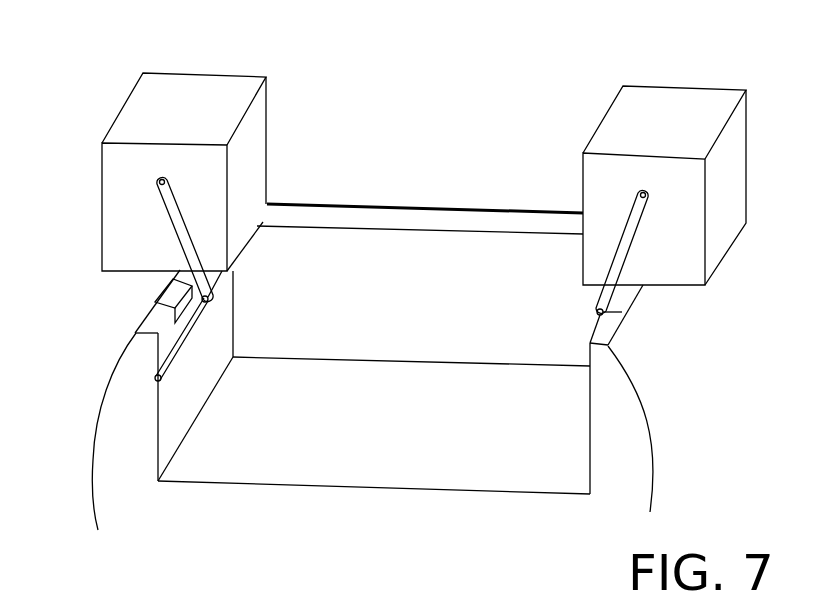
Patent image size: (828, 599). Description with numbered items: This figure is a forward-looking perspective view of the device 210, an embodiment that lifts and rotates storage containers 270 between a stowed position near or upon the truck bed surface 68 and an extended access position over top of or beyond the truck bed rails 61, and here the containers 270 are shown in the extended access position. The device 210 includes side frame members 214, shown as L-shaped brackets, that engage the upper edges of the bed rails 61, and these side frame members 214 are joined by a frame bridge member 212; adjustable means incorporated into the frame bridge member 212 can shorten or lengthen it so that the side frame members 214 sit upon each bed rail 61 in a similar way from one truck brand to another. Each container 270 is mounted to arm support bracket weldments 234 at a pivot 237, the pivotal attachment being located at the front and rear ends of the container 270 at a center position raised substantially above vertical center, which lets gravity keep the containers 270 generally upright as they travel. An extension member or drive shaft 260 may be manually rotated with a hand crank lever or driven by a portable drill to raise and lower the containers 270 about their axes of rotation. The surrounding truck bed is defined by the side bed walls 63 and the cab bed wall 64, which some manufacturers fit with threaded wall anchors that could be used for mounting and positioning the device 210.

The device 210 is at (116, 56).
The containers 270 is at (262, 102).
The frame bridge member 212 is at (338, 205).
The cab bed wall 64 is at (477, 248).
The pivot pin 237 is at (158, 188).
The arm support bracket weldments 234 is at (174, 227).
The bed rail 61 is at (151, 326).
The extension member or drive shaft 260 is at (157, 379).
The side bed walls 63 is at (165, 442).
The truck bed surface 68 is at (447, 479).
The side frame members 214 is at (623, 311).